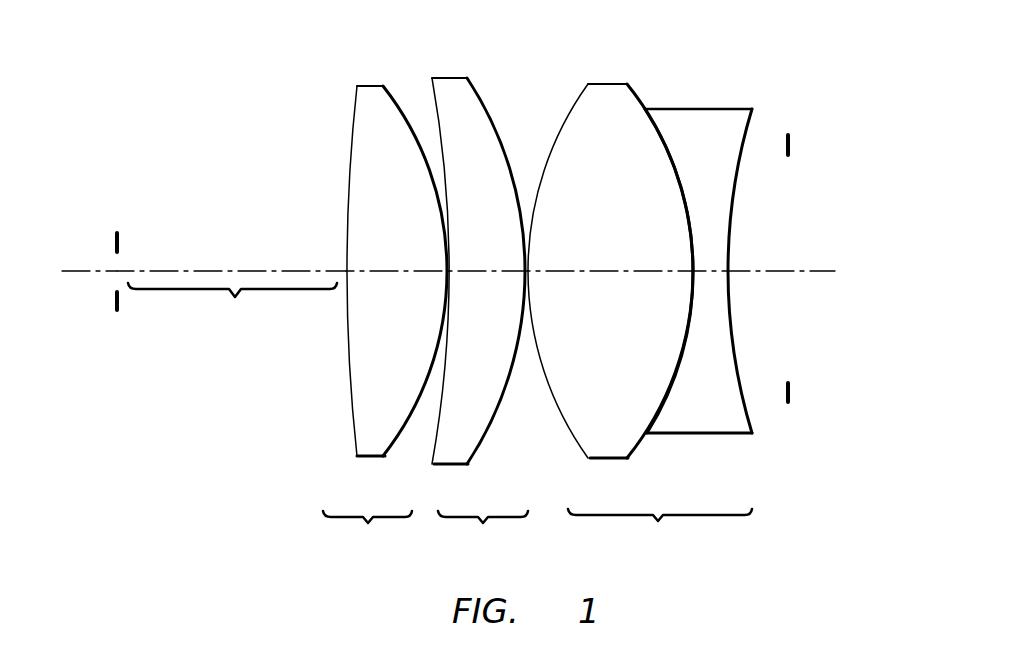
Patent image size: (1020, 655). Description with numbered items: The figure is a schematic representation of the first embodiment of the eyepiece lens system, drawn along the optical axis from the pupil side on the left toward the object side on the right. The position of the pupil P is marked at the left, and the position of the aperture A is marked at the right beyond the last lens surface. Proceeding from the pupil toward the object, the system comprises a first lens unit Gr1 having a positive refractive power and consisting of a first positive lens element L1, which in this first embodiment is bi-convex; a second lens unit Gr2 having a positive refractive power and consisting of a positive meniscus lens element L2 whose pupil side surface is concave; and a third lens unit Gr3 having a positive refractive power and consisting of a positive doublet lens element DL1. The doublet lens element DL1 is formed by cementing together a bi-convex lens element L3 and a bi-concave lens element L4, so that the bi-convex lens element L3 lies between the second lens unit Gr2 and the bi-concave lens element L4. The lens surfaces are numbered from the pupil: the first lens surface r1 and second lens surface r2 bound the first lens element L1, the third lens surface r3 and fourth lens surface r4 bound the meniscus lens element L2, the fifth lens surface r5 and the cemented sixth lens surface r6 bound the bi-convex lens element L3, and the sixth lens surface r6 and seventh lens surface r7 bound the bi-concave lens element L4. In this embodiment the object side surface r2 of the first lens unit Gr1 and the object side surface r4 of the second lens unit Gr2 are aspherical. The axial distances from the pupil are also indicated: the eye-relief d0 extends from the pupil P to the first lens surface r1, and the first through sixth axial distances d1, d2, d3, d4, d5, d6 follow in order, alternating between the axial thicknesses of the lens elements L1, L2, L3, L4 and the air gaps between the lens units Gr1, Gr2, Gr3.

The pupil P is at (114, 300).
The aperture A is at (791, 393).
The eye-relief d0 is at (231, 302).
The first axial distance d1 is at (407, 273).
The second axial distance d2 is at (446, 268).
The third axial distance d3 is at (483, 273).
The fourth axial distance d4 is at (528, 268).
The fifth axial distance d5 is at (603, 273).
The sixth axial distance d6 is at (706, 273).
The first lens surface r1 is at (354, 103).
The second lens surface r2 is at (400, 102).
The third lens surface r3 is at (431, 90).
The fourth lens surface r4 is at (489, 114).
The fifth lens surface r5 is at (575, 99).
The sixth lens surface r6 is at (653, 122).
The seventh lens surface r7 is at (746, 131).
The first positive lens element L1 is at (393, 235).
The positive meniscus lens element L2 is at (473, 234).
The bi-convex lens element L3 is at (610, 236).
The bi-concave lens element L4 is at (728, 242).
The positive doublet lens element DL1 is at (710, 203).
The first lens unit Gr1 is at (385, 284).
The second lens unit Gr2 is at (474, 279).
The third lens unit Gr3 is at (670, 284).